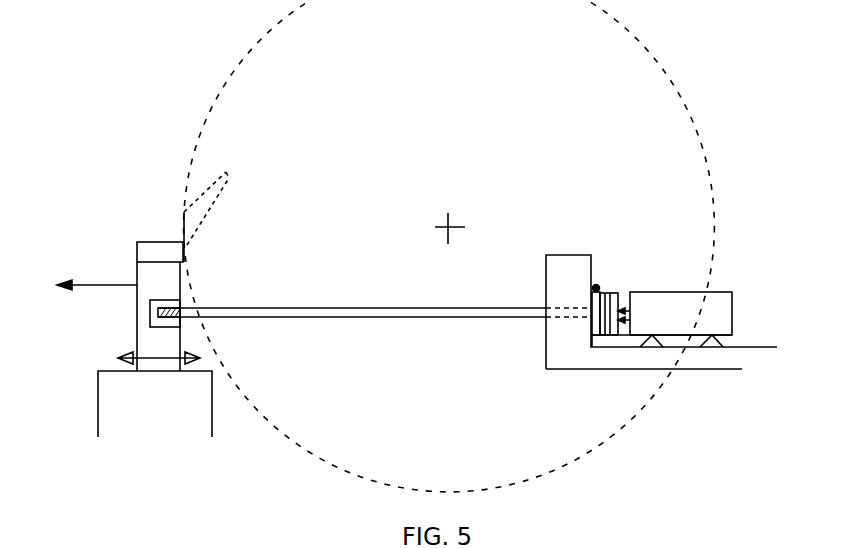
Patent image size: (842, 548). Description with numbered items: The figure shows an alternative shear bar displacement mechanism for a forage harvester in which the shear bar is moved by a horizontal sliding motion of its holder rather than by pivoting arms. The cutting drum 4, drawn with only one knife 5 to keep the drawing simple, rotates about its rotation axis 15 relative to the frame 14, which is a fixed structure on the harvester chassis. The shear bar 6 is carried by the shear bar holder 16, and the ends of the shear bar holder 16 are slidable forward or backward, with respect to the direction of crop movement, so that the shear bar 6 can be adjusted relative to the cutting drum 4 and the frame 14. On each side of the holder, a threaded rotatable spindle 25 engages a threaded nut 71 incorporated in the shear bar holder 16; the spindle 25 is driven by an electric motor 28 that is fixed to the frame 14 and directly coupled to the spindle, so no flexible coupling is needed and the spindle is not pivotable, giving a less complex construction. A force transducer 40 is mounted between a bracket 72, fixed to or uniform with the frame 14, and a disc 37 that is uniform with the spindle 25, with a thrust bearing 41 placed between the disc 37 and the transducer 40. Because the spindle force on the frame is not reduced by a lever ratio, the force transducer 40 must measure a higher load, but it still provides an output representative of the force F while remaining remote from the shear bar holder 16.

The cutting drum 4 is at (637, 38).
The knife 5 is at (215, 207).
The shear bar 6 is at (147, 257).
The frame 14 is at (123, 418).
The rotation axis 15 is at (458, 221).
The shear bar holder 16 is at (137, 305).
The threaded rotatable spindle 25 is at (340, 314).
The electric motor 28 is at (677, 300).
The disc 37 is at (612, 295).
The force transducer 40 is at (591, 323).
The thrust bearing 41 is at (603, 337).
The threaded nut 71 is at (162, 322).
The bracket 72 is at (562, 273).